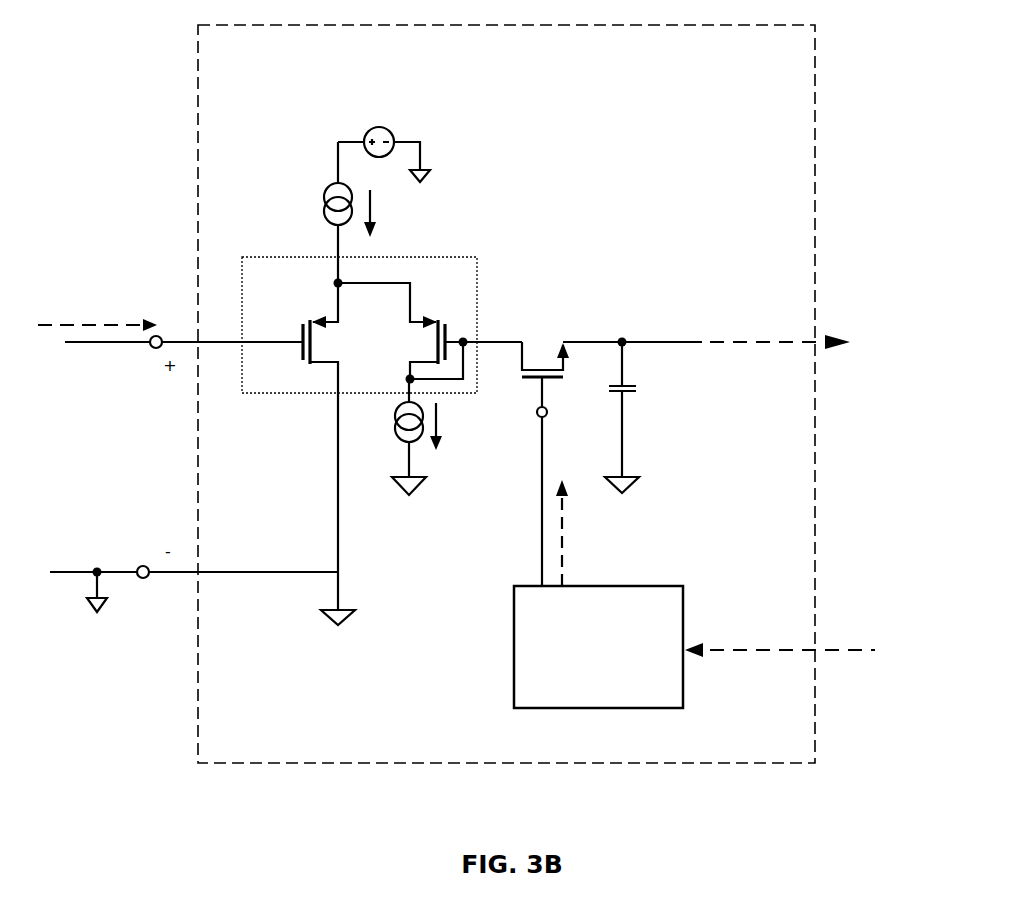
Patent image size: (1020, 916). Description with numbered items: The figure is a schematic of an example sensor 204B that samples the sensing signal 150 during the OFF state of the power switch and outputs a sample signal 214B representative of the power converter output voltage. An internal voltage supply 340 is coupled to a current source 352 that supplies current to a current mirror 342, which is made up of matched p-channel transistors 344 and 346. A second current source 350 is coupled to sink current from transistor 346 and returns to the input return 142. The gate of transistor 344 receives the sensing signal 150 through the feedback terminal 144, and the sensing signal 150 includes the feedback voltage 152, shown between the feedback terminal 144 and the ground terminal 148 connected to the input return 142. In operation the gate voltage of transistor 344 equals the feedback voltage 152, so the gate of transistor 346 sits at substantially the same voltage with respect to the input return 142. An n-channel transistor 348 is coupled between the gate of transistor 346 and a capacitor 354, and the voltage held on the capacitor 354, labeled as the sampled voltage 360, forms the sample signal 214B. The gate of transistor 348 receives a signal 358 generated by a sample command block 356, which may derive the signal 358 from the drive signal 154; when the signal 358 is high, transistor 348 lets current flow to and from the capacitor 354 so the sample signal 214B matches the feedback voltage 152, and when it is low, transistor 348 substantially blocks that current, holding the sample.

The sensor 204B is at (506, 394).
The sensing signal 150 is at (104, 318).
The feedback terminal 144 is at (148, 350).
The feedback voltage 152 is at (142, 461).
The ground terminal 148 is at (145, 586).
The input return 142 is at (92, 600).
The internal voltage supply 340 is at (397, 133).
The current source 352 is at (322, 212).
The current mirror 342 is at (478, 257).
The p-channel transistor 344 is at (322, 302).
The p-channel transistor 346 is at (436, 310).
The n-channel transistor 348 is at (555, 336).
The current source 350 is at (418, 449).
The capacitor 354 is at (608, 388).
The sample voltage VSAMPLE 360 is at (725, 414).
The sample signal 214B is at (765, 337).
The sample command block 356 is at (683, 702).
The signal 358 is at (568, 556).
The drive signal 154 is at (737, 644).